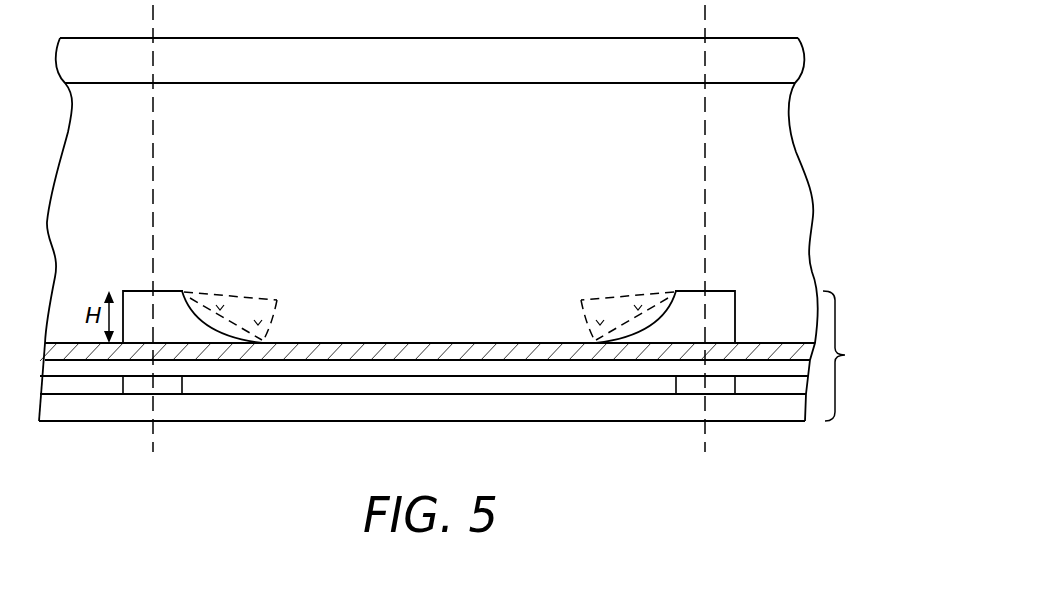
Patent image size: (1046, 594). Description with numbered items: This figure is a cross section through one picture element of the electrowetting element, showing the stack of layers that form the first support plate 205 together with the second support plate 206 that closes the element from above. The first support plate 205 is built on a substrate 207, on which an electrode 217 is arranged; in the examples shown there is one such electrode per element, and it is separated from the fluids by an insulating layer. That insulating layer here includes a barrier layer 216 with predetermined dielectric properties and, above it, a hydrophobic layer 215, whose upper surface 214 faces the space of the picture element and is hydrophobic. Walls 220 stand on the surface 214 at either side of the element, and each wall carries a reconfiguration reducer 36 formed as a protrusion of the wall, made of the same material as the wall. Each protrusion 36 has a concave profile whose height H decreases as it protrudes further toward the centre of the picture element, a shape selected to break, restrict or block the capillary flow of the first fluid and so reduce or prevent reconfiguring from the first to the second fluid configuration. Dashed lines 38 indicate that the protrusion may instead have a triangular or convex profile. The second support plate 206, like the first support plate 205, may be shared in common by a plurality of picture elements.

The second support plate 206 is at (793, 60).
The walls 220 is at (131, 291).
The reconfiguration reducer 36 is at (190, 310).
The dashed lines 38 is at (278, 302).
The surface 214 is at (427, 343).
The hydrophobic layer 215 is at (288, 354).
The barrier layer 216 is at (382, 367).
The electrode 217 is at (476, 385).
The substrate 207 is at (568, 405).
The first support plate 205 is at (857, 356).